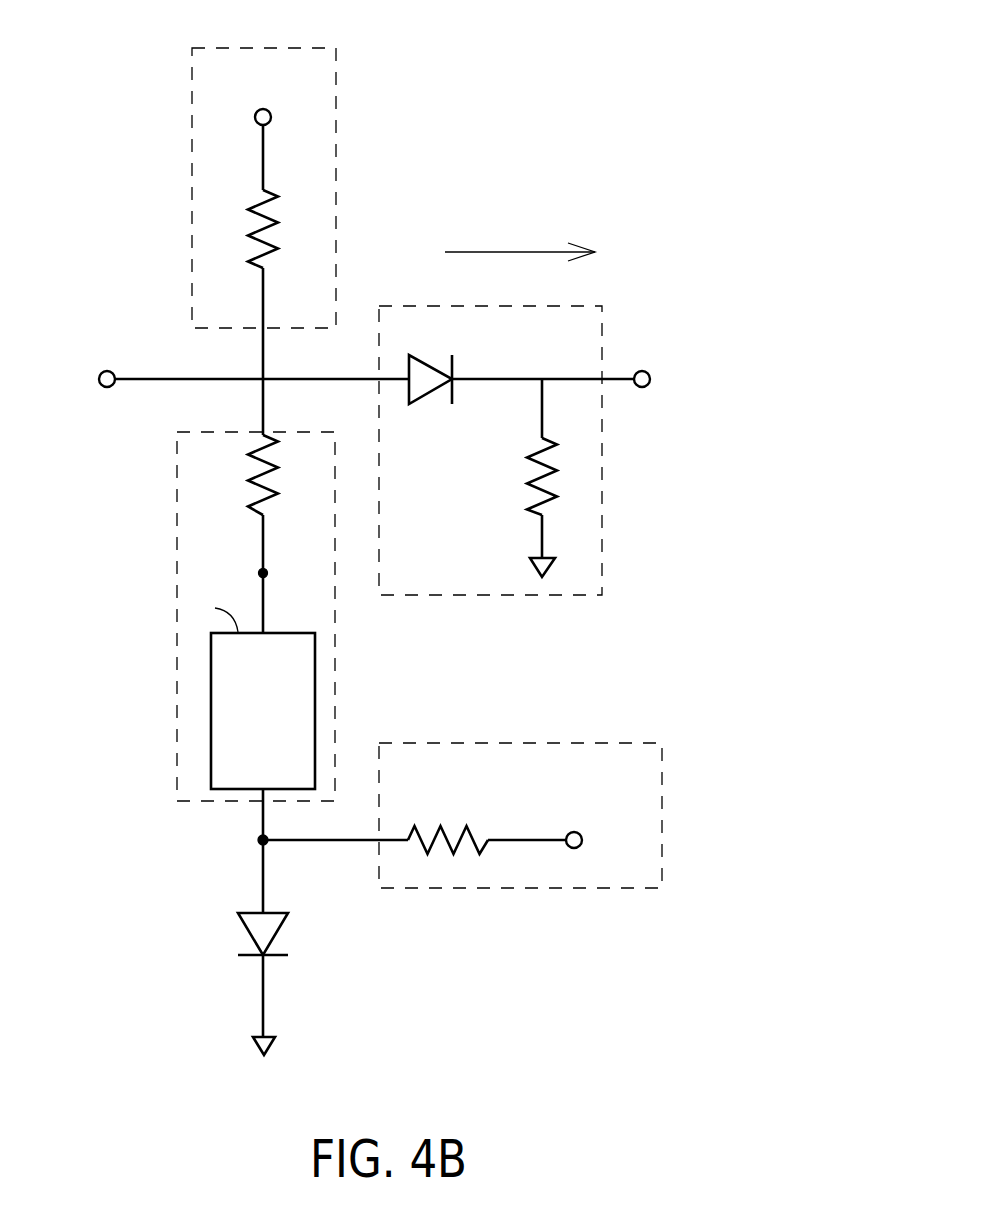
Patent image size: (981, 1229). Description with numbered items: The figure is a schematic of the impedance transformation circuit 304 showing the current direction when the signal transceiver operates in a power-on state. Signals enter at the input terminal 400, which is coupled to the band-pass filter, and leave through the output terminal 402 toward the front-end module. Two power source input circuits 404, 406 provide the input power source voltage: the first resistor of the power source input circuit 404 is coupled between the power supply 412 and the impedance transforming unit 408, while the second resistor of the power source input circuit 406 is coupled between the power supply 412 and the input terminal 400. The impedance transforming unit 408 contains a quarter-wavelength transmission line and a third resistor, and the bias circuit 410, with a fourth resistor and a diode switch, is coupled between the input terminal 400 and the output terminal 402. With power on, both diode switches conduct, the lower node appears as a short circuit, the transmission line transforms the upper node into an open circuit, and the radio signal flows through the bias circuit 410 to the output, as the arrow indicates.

The impedance transformation circuit 304 is at (647, 72).
The input terminal 400 is at (107, 371).
The output terminal 402 is at (642, 371).
The power source input circuit 404 is at (648, 743).
The power source input circuit 406 is at (230, 48).
The impedance transforming unit 408 is at (230, 430).
The bias circuit 410 is at (530, 306).
The power supply 412 is at (255, 117).